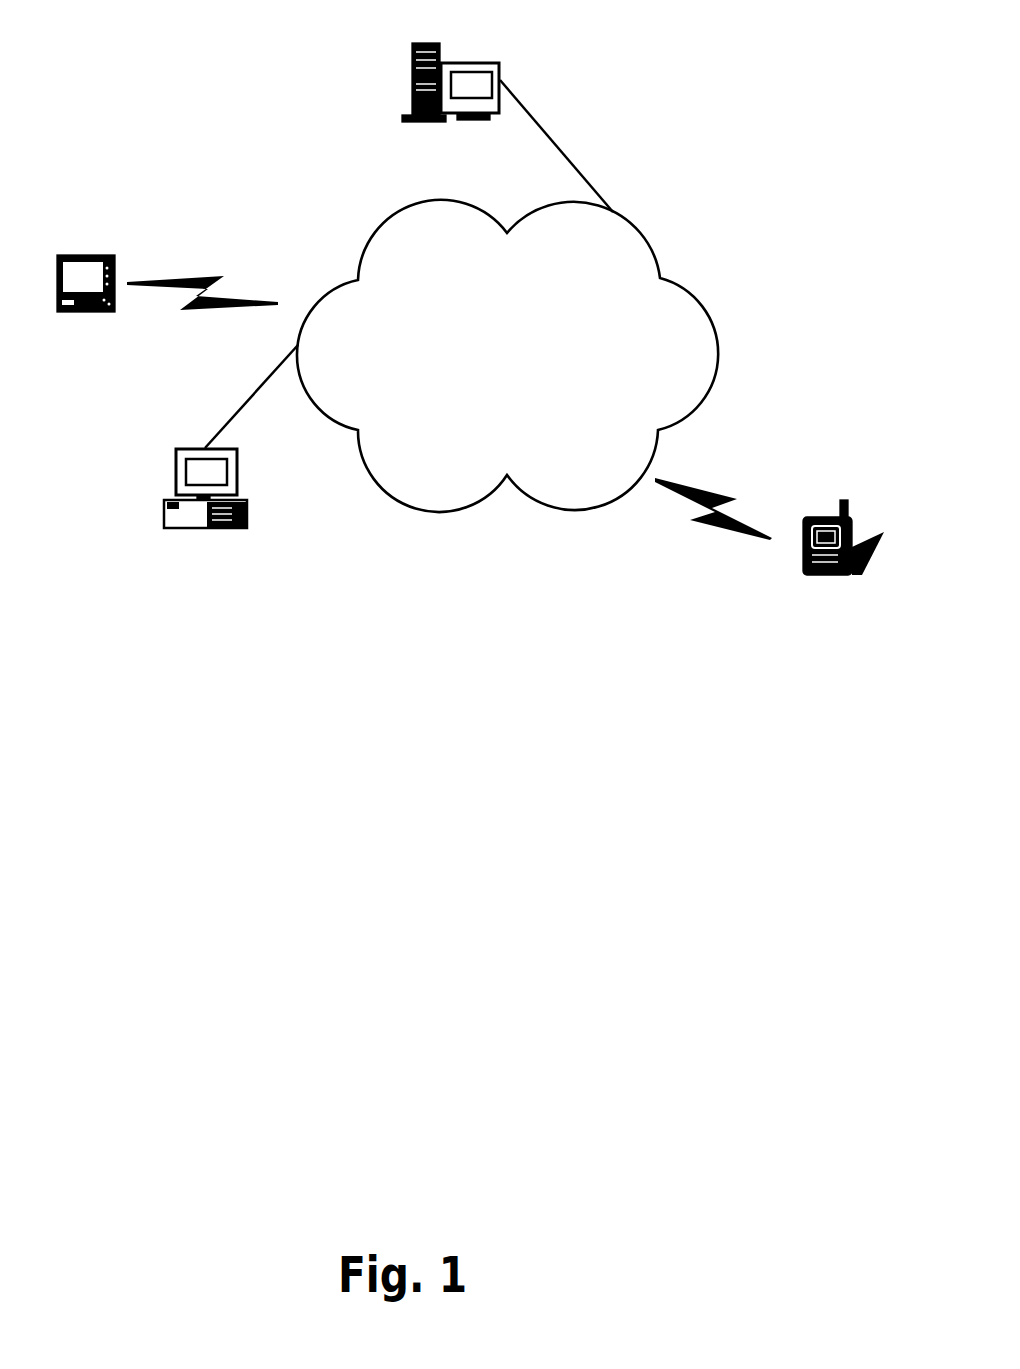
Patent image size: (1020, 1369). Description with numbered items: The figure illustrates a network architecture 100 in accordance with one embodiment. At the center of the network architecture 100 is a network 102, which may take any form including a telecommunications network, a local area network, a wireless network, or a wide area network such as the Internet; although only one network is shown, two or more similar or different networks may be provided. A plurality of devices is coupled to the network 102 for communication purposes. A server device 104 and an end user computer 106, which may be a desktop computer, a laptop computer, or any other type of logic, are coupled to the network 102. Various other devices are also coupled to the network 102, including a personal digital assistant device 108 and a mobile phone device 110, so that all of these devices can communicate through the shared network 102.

The network architecture 100 is at (405, 818).
The network 102 is at (568, 510).
The server device 104 is at (410, 80).
The end user computer 106 is at (163, 508).
The personal digital assistant (PDA) device 108 is at (83, 255).
The mobile phone device 110 is at (800, 518).